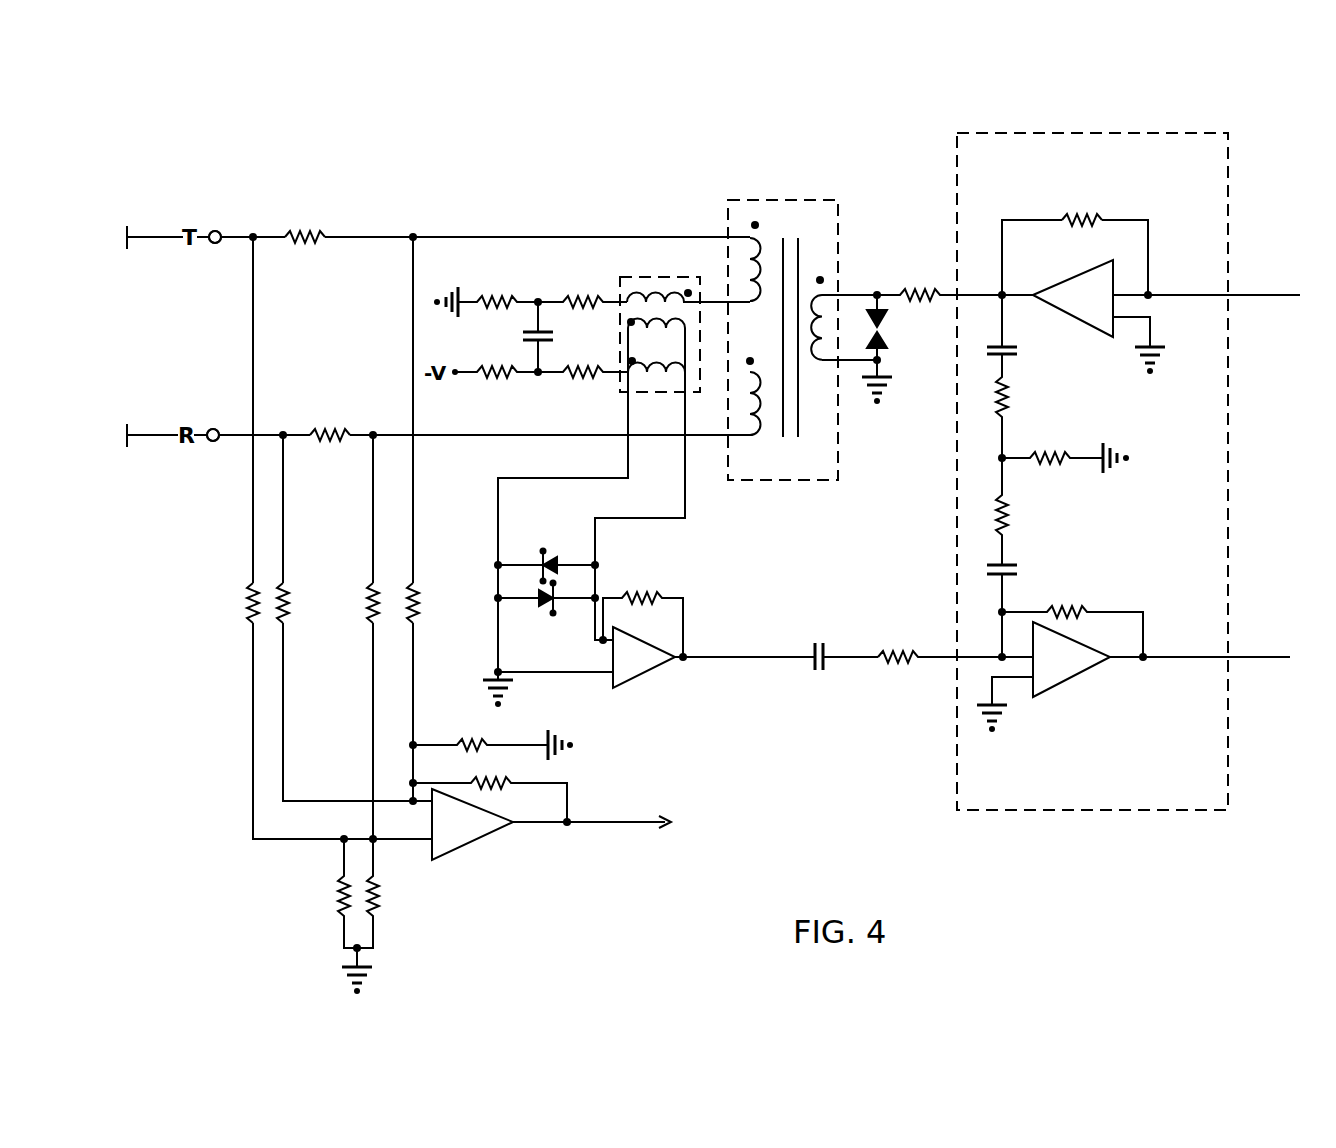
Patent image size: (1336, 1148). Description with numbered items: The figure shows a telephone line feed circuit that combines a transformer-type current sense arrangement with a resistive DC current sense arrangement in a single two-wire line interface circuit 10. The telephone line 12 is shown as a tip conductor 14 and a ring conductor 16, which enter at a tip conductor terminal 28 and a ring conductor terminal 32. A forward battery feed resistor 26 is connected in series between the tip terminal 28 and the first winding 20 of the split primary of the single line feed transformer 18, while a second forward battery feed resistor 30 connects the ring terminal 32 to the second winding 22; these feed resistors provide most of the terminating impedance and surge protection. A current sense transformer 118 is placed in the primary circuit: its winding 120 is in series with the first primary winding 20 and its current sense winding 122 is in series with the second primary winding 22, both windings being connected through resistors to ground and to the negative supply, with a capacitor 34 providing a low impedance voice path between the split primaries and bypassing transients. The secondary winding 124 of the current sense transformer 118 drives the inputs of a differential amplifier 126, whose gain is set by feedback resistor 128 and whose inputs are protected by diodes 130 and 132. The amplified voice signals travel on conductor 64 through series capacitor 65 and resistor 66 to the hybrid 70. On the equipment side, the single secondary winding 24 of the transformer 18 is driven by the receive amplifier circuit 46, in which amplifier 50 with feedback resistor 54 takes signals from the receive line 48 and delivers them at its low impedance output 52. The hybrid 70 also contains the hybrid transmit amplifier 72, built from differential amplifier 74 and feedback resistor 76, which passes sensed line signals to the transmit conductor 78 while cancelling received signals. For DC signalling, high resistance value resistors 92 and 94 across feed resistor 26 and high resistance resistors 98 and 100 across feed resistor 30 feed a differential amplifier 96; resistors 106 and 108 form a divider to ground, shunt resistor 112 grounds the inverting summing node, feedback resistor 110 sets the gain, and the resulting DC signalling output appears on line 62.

The line interface circuit 10 is at (941, 251).
The telephone line 12 is at (152, 200).
The tip conductor 14 is at (163, 240).
The ring conductor 16 is at (143, 432).
The transformer 18 is at (778, 200).
The first winding 20 is at (748, 237).
The second winding 22 is at (735, 447).
The secondary winding 24 is at (825, 296).
The forward battery feed resistor 26 is at (300, 233).
The tip conductor terminal 28 is at (220, 232).
The second forward battery feed resistor 30 is at (328, 431).
The ring conductor terminal 32 is at (240, 415).
The capacitor 34 is at (555, 356).
The receive amplifier circuit 46 is at (1126, 182).
The receive line 48 is at (1268, 297).
The amplifier 50 is at (1068, 318).
The low impedance output 52 is at (1020, 294).
The feedback resistor 54 is at (1077, 218).
The line 62 is at (600, 826).
The conductor 64 is at (748, 657).
The series capacitor 65 is at (826, 646).
The resistor 66 is at (898, 652).
The hybrid 70 is at (1228, 530).
The hybrid transmit amplifier 72 is at (1146, 600).
The differential amplifier 74 is at (1080, 683).
The feedback resistor 76 is at (1062, 603).
The transmit conductor 78 is at (1240, 657).
The high resistance value resistor 92 is at (248, 618).
The high resistance value resistor 94 is at (438, 588).
The differential amplifier 96 is at (470, 845).
The high resistance resistor 98 is at (288, 604).
The high resistance resistor 100 is at (368, 618).
The resistor 106 is at (340, 912).
The resistor 108 is at (378, 896).
The feedback resistor 110 is at (512, 790).
The shunt resistor 112 is at (490, 745).
The current sense transformer 118 is at (627, 278).
The winding 120 is at (675, 292).
The current sense winding 122 is at (663, 380).
The secondary winding 124 is at (685, 328).
The differential amplifier 126 is at (655, 665).
The feedback resistor 128 is at (645, 595).
The diode 130 is at (590, 549).
The diode 132 is at (545, 608).